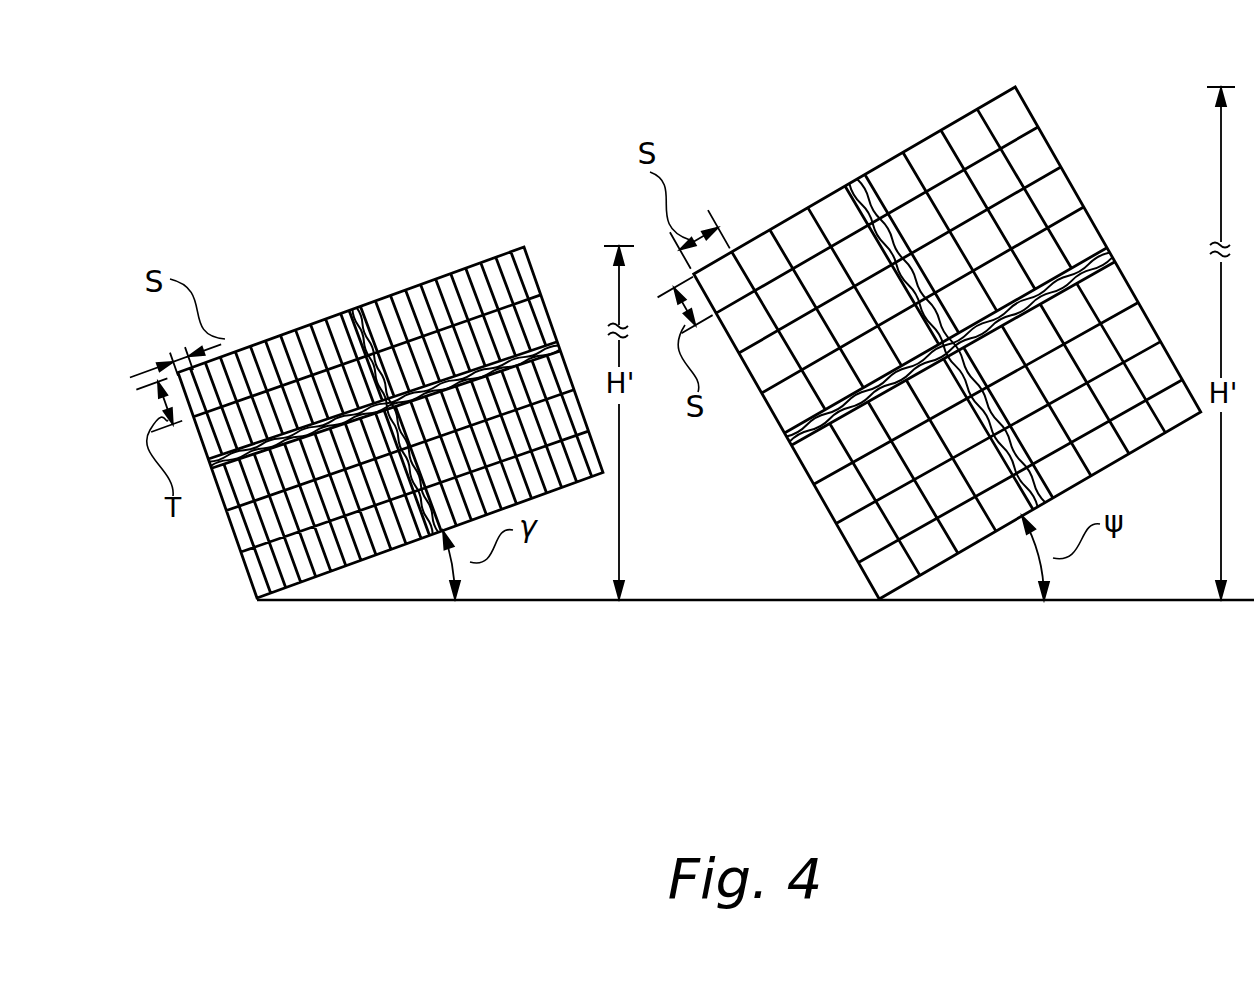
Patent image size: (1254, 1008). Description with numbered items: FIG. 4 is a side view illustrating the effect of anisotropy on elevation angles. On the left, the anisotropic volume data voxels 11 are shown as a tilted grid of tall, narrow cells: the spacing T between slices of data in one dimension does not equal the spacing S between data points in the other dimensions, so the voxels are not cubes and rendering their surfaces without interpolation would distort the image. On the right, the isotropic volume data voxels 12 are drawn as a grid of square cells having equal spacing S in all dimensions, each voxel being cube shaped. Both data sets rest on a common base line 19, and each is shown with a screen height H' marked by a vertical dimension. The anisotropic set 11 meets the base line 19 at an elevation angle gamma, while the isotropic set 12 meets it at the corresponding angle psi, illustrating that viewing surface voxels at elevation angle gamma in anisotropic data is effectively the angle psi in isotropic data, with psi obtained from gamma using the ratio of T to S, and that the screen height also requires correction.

The anisotropic volume data set 11 is at (278, 335).
The isotropic volume data set 12 is at (743, 242).
The reference base line 19 is at (738, 600).